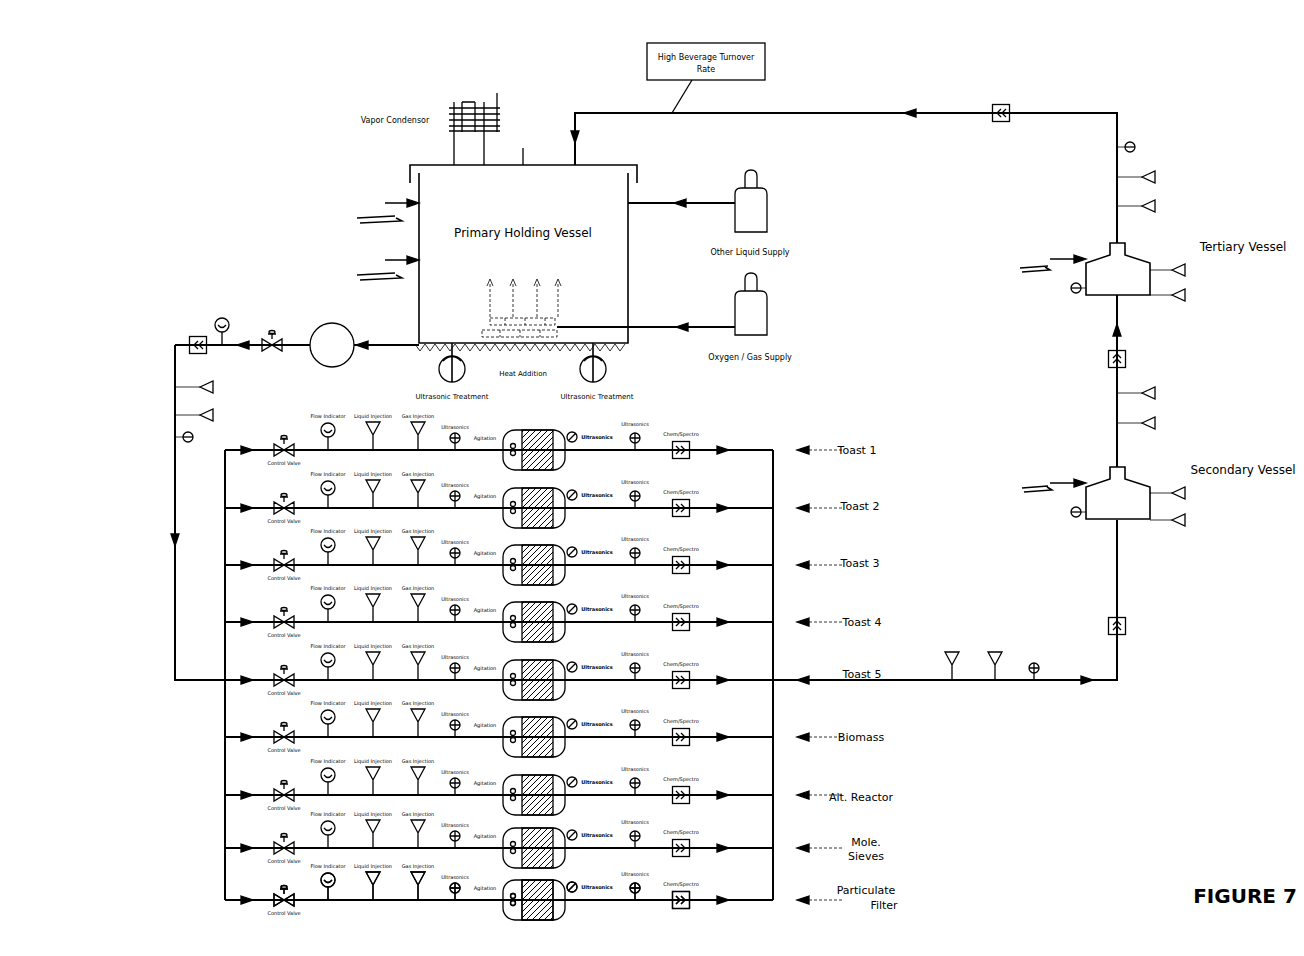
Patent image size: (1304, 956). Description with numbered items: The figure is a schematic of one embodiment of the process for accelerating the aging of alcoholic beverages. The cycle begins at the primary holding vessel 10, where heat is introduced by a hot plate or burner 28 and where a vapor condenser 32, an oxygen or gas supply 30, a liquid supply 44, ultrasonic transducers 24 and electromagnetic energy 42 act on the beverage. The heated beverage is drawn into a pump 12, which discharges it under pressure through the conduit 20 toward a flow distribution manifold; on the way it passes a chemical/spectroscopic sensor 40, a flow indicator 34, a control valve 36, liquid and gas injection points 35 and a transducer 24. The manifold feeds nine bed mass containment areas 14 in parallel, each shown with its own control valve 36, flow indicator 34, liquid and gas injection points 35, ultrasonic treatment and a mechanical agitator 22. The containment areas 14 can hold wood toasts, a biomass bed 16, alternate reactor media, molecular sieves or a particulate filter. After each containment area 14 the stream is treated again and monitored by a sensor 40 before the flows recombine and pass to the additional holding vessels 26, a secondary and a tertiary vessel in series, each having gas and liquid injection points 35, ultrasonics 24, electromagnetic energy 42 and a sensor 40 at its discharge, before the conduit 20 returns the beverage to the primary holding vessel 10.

The primary holding vessel 10 is at (523, 209).
The pump 12 is at (297, 311).
The bed mass containment areas 14 is at (557, 684).
The biomass bed 16 is at (538, 918).
The conduit 20 is at (665, 367).
The mechanical agitator 22 is at (495, 919).
The ultrasonic chambers/transducers 24 is at (666, 519).
The additional holding vessels 26 is at (1097, 352).
The hot plate/burner (heat source) 28 is at (521, 346).
The oxygen/gas supply 30 is at (698, 303).
The vapor condenser 32 is at (438, 116).
The flow indicator/sensor 34 is at (259, 604).
The injection port 35 is at (699, 535).
The control valves 36 is at (258, 604).
The chemical/spectroscopic sensors 40 is at (672, 503).
The electromagnetic energy 42 is at (700, 327).
The liquid supply 44 is at (733, 191).